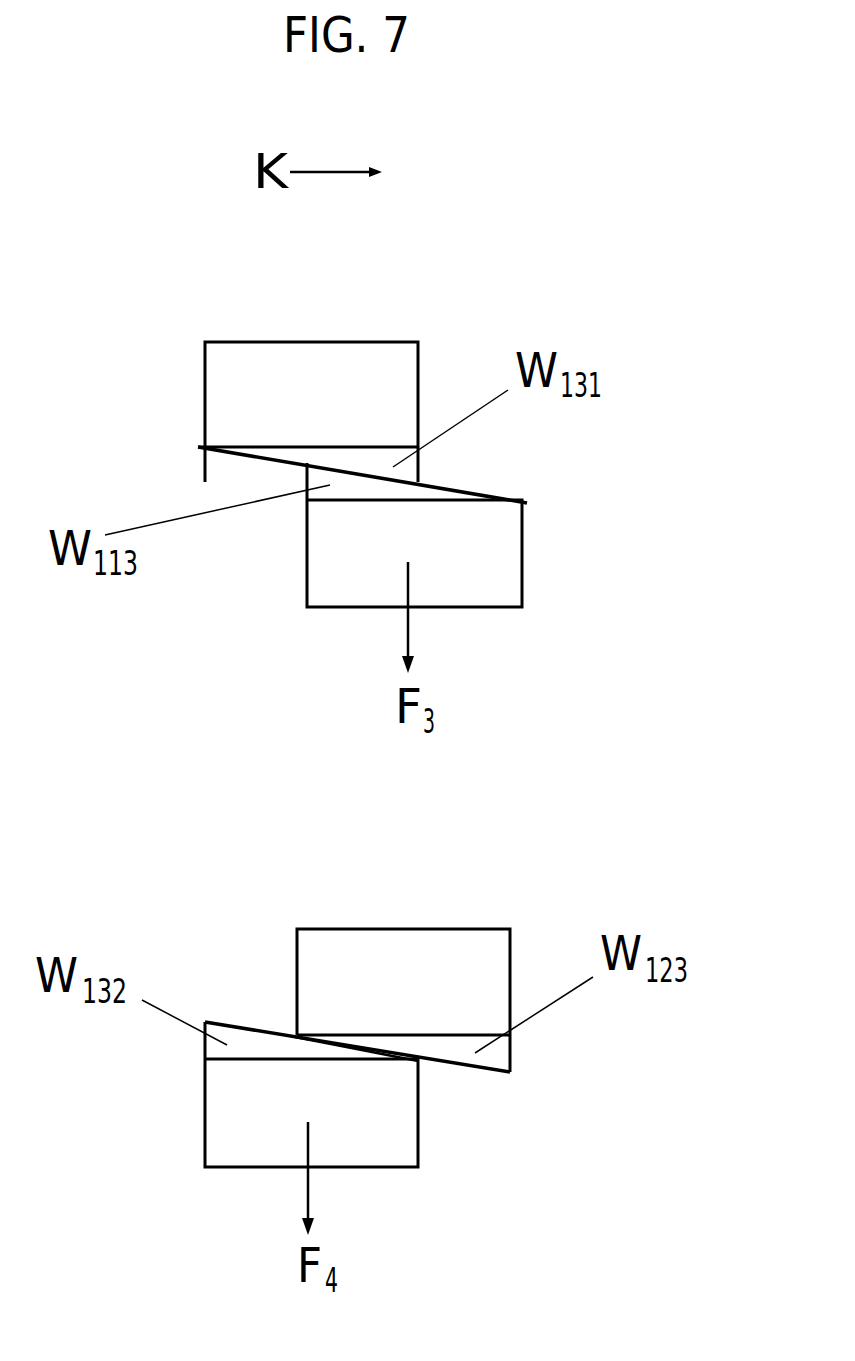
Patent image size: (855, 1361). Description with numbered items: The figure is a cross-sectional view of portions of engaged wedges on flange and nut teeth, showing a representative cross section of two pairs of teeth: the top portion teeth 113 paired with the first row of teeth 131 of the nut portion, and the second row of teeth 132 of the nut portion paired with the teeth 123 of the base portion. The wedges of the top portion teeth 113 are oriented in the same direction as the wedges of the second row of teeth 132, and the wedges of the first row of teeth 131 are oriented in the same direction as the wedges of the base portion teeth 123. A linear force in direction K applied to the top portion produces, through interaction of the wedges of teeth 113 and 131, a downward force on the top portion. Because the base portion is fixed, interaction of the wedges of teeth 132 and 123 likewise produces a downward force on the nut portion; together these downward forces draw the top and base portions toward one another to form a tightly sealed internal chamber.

The first row of teeth of the nut portion 131 is at (319, 377).
The top portion teeth 113 is at (368, 565).
The teeth of the base portion 123 is at (368, 960).
The second row of teeth of the nut portion 132 is at (268, 1123).